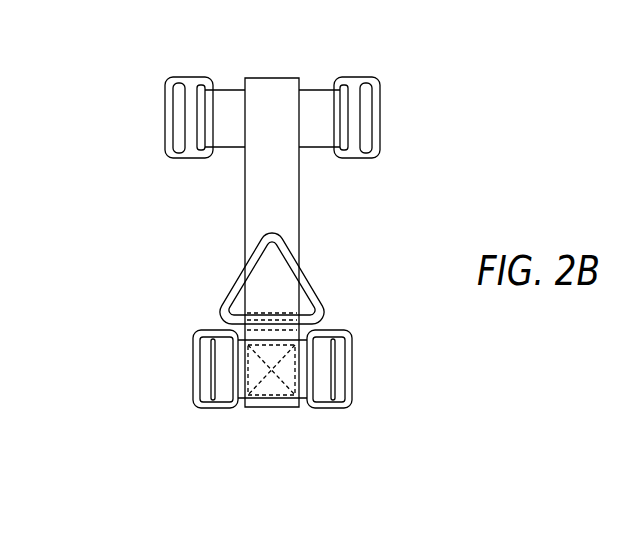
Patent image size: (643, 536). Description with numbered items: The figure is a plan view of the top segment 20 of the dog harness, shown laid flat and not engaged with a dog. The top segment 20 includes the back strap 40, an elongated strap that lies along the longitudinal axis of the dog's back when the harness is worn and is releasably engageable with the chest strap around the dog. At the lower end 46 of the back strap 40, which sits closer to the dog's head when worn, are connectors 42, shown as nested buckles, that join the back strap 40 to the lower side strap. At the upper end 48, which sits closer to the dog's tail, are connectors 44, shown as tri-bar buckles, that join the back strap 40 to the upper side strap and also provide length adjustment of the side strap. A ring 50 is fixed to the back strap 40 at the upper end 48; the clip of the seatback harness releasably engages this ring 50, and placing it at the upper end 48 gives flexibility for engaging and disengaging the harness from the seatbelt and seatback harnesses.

The top segment 20 is at (531, 86).
The back strap 40 is at (257, 203).
The connectors 42 is at (165, 100).
The connectors 44 is at (193, 353).
The lower end 46 is at (288, 54).
The upper end 48 is at (257, 423).
The ring 50 is at (312, 274).